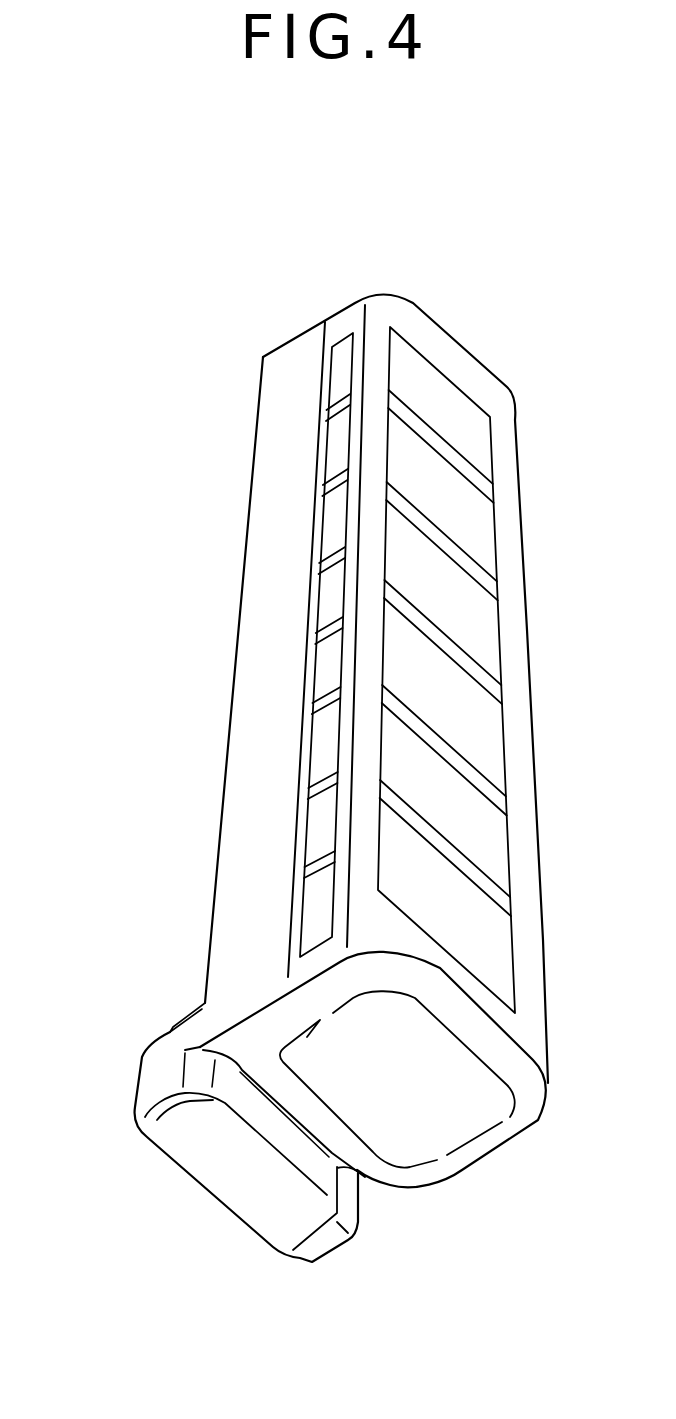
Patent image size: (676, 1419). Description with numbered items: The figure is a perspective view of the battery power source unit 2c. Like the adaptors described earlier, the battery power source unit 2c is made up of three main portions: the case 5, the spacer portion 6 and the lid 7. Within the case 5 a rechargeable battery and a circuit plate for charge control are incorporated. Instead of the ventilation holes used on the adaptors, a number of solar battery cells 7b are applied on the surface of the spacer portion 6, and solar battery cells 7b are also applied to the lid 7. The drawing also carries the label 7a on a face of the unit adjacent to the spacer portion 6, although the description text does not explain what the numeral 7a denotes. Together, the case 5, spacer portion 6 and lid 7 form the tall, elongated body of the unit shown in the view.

The battery power source unit 2c is at (214, 641).
The case 5 is at (270, 502).
The spacer portion 6 is at (343, 342).
The lid 7 is at (405, 315).
The side face 7a is at (327, 318).
The solar battery cells 7b is at (457, 410).